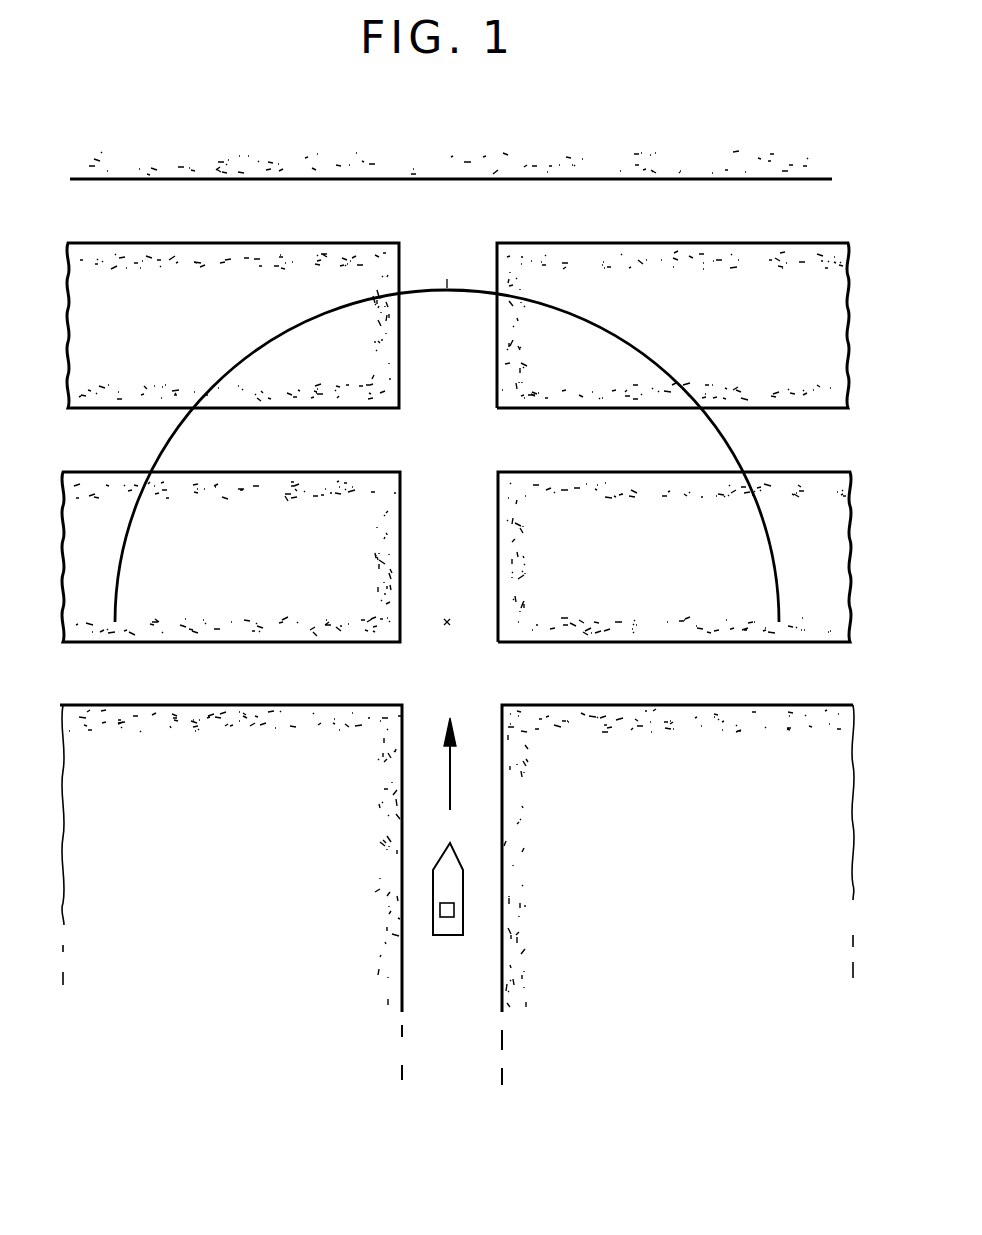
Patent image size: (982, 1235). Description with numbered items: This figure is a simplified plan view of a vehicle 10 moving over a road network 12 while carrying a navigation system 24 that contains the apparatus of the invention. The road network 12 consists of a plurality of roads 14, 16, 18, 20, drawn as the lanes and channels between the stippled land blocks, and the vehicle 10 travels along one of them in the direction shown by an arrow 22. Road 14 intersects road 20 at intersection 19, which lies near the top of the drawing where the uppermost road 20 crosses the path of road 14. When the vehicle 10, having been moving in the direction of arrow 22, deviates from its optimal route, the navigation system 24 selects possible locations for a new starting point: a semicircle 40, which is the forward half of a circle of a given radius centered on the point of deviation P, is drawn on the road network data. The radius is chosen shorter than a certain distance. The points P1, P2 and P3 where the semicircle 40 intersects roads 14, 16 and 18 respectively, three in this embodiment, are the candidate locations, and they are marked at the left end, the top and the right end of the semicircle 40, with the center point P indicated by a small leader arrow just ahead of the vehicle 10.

The vehicle 10 is at (463, 872).
The road network 12 is at (283, 865).
The road 14 is at (445, 990).
The road 16 is at (820, 675).
The road 18 is at (820, 446).
The intersection 19 is at (486, 237).
The road 20 is at (807, 222).
The arrow 22 is at (450, 758).
The navigation system 24 is at (454, 915).
The semicircle 40 is at (116, 547).
The center point of path P is at (447, 622).
The point P1 is at (129, 445).
The point P2 is at (465, 244).
The point P3 is at (784, 445).